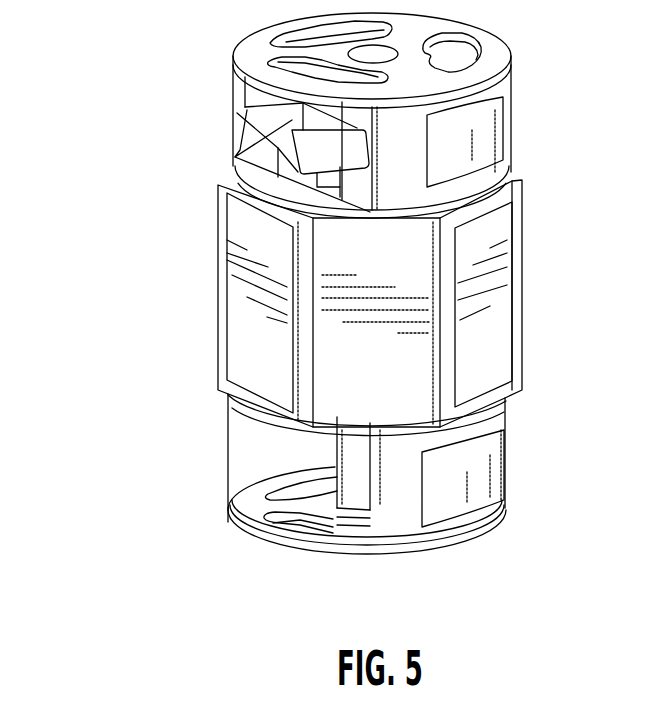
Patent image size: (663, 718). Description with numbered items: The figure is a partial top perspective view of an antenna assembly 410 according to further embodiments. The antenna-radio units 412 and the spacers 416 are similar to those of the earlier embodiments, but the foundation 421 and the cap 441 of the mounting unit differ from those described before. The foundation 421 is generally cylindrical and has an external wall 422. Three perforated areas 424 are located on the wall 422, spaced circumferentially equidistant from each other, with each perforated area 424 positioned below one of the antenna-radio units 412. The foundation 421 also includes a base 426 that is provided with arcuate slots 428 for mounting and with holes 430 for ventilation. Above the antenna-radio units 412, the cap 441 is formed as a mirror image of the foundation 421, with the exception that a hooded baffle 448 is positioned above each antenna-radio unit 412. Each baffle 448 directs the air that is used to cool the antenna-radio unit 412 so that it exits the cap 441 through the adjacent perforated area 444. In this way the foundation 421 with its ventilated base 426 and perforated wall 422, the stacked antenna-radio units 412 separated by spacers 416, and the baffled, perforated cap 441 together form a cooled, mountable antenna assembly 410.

The antenna assembly 410 is at (138, 370).
The cap 441 is at (528, 92).
The perforated area 444 is at (260, 101).
The hooded baffle 448 is at (285, 118).
The antenna-radio unit 412 is at (514, 298).
The spacer 416 is at (410, 382).
The external wall 422 is at (390, 532).
The perforated area 424 is at (452, 508).
The base 426 is at (337, 512).
The foundation 421 is at (325, 535).
The arcuate slot 428 is at (253, 503).
The hole 430 is at (277, 520).